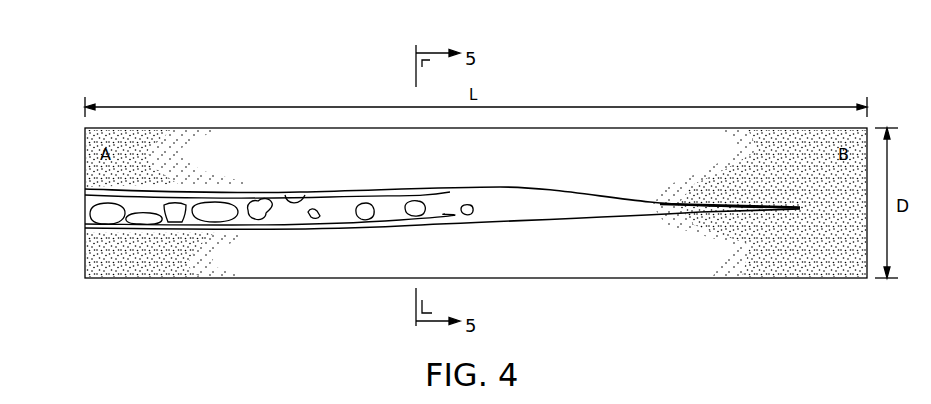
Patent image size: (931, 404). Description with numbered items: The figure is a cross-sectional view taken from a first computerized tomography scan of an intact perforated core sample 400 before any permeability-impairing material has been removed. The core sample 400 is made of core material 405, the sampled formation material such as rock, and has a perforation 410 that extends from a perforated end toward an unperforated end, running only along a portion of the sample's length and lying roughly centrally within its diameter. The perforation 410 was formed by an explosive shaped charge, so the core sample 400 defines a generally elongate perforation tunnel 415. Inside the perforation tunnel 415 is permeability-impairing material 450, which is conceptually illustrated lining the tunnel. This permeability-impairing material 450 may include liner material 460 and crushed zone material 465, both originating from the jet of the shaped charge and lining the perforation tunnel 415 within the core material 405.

The intact perforated core sample 400 is at (307, 57).
The core material 405 is at (613, 279).
The perforation 410 is at (80, 183).
The perforation tunnel 415 is at (497, 190).
The permeability-impairing material 450 is at (386, 238).
The liner material 460 is at (358, 201).
The crushed zone material 465 is at (283, 194).